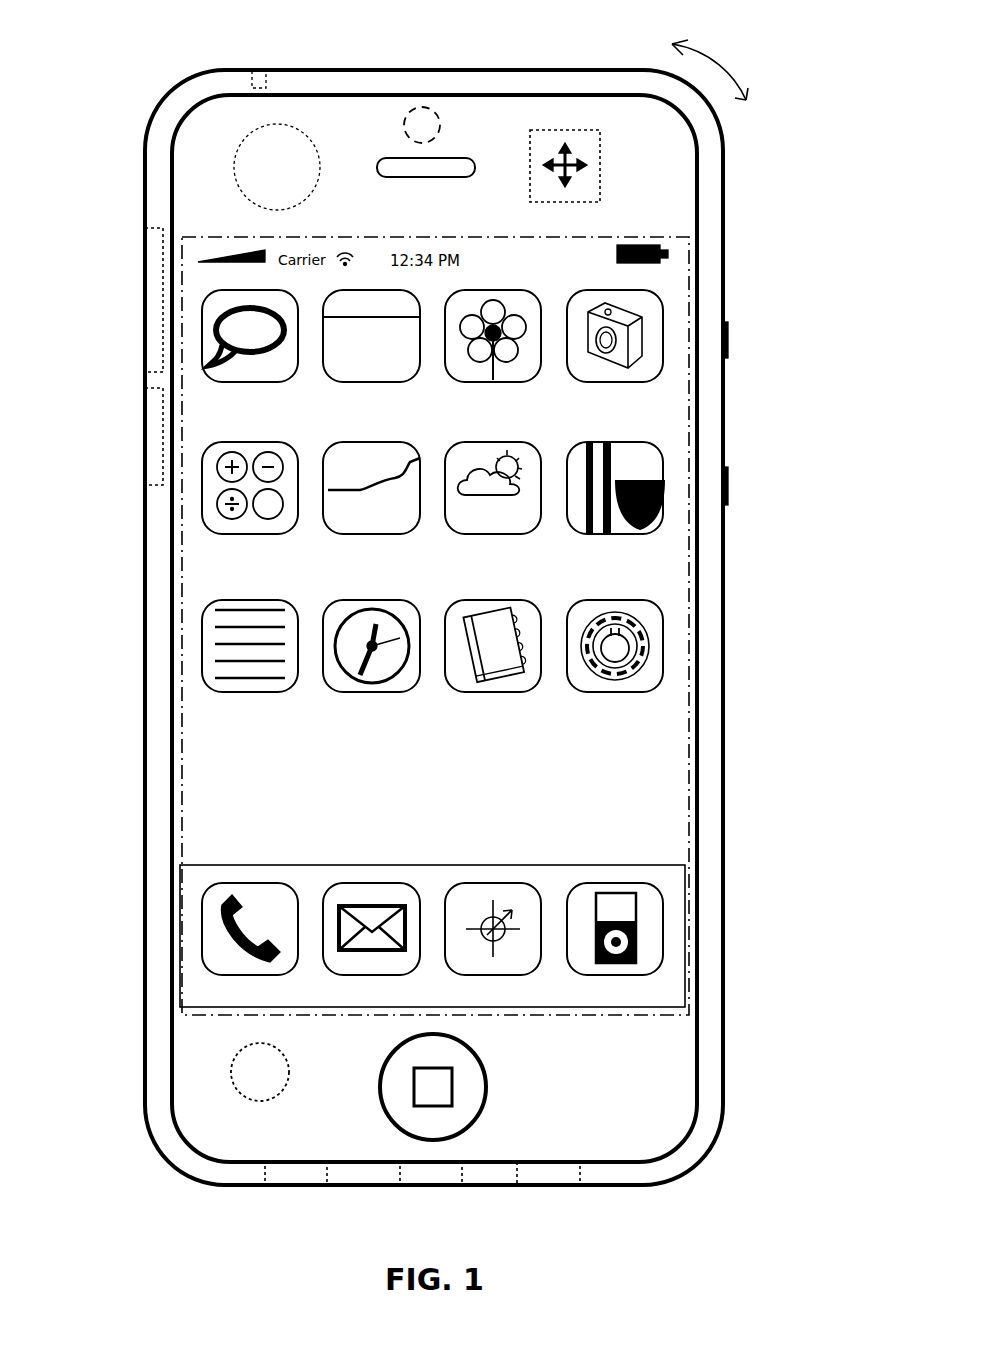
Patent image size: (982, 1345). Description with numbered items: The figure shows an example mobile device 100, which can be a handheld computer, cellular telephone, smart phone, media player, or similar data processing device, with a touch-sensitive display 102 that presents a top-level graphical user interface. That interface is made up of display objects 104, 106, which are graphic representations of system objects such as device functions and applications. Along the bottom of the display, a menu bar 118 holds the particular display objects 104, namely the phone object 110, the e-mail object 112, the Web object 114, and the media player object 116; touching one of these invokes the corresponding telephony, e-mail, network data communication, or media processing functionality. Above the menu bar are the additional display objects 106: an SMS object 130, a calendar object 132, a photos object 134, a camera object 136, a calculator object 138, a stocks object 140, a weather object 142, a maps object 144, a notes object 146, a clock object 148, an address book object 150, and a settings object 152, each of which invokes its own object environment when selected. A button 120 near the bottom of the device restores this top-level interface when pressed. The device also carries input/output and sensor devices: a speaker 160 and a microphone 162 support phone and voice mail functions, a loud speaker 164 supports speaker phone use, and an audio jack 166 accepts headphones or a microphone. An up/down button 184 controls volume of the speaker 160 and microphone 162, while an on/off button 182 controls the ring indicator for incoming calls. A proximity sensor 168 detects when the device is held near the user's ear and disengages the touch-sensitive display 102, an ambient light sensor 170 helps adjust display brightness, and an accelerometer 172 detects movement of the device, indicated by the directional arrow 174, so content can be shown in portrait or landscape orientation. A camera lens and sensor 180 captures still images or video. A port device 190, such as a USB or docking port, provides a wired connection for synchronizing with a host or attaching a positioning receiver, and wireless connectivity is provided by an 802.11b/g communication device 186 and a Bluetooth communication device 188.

The mobile device 100 is at (520, 70).
The touch-sensitive display 102 is at (622, 238).
The display objects 104 is at (668, 883).
The display objects 106 is at (665, 288).
The phone object 110 is at (250, 883).
The e-mail object 112 is at (372, 883).
The Web object 114 is at (493, 883).
The media player object 116 is at (615, 883).
The menu bar 118 is at (565, 1012).
The button 120 is at (486, 1085).
The SMS object 130 is at (290, 382).
The calendar object 132 is at (412, 382).
The photos object 134 is at (532, 382).
The camera object 136 is at (660, 382).
The calculator object 138 is at (290, 534).
The stocks object 140 is at (412, 534).
The weather object 142 is at (532, 534).
The maps object 144 is at (660, 534).
The notes object 146 is at (290, 692).
The clock object 148 is at (412, 692).
The address book object 150 is at (532, 692).
The settings object 152 is at (660, 692).
The speaker 160 is at (398, 177).
The microphone 162 is at (327, 1180).
The loud speaker 164 is at (580, 1180).
The audio jack 166 is at (266, 80).
The proximity sensor 168 is at (235, 172).
The ambient light sensor 170 is at (278, 1095).
The accelerometer 172 is at (600, 168).
The directional arrow 174 is at (732, 62).
The camera lens and sensor 180 is at (440, 122).
The on/off button 182 is at (728, 340).
The up/down button 184 is at (728, 485).
The 802.11b/g communication device 186 is at (150, 230).
The Bluetooth communication device 188 is at (150, 390).
The port device 190 is at (462, 1180).